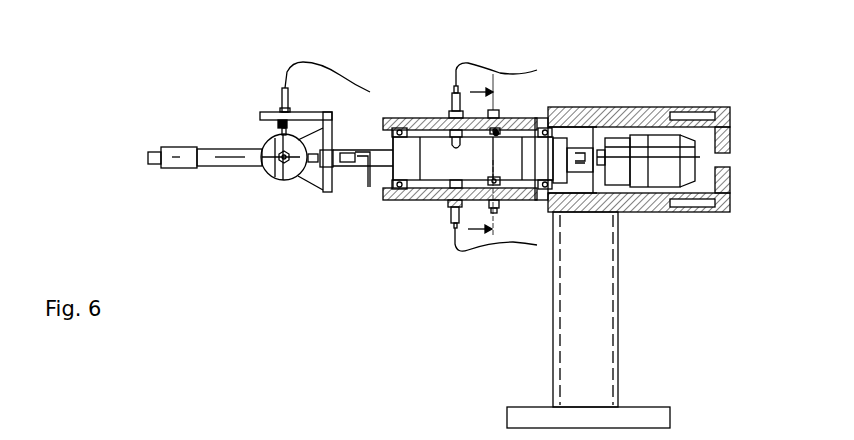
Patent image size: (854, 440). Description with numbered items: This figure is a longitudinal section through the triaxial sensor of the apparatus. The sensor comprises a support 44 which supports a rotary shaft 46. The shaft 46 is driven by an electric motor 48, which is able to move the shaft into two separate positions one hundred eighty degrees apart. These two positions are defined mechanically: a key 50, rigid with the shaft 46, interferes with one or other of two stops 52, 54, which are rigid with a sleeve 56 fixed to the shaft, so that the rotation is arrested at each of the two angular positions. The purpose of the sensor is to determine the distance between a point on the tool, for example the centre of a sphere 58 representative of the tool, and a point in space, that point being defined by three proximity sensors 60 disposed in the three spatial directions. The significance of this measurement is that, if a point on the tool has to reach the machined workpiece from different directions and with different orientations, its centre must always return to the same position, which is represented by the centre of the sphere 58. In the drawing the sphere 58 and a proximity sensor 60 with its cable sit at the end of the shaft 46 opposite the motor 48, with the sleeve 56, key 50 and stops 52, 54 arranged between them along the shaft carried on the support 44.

The support 44 is at (597, 302).
The rotary shaft 46 is at (433, 150).
The electric motor 48 is at (656, 152).
The key 50 is at (483, 173).
The stop 52 is at (493, 180).
The stop 54 is at (496, 133).
The sleeve 56 is at (383, 193).
The sphere 58 is at (268, 165).
The proximity sensor 60 is at (280, 130).